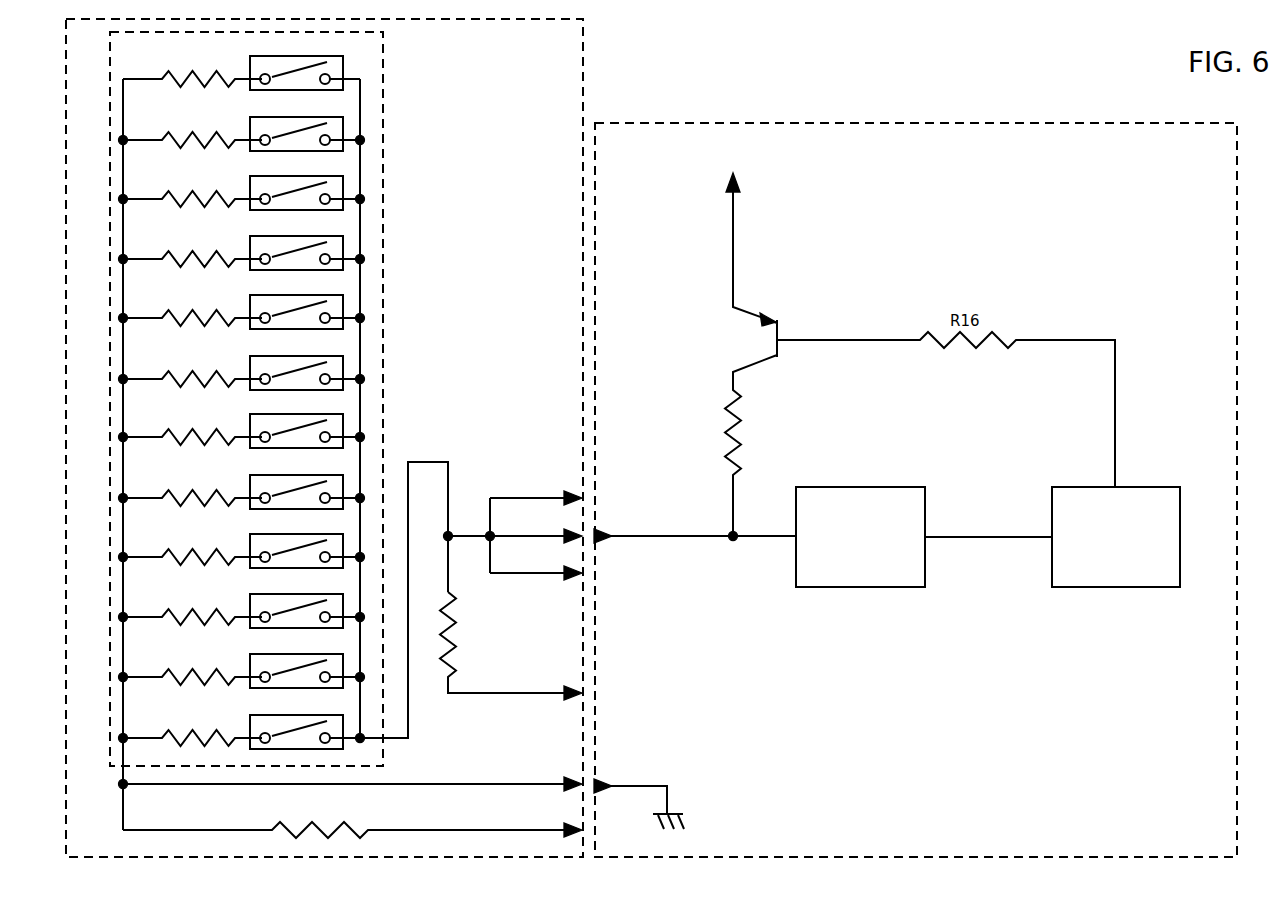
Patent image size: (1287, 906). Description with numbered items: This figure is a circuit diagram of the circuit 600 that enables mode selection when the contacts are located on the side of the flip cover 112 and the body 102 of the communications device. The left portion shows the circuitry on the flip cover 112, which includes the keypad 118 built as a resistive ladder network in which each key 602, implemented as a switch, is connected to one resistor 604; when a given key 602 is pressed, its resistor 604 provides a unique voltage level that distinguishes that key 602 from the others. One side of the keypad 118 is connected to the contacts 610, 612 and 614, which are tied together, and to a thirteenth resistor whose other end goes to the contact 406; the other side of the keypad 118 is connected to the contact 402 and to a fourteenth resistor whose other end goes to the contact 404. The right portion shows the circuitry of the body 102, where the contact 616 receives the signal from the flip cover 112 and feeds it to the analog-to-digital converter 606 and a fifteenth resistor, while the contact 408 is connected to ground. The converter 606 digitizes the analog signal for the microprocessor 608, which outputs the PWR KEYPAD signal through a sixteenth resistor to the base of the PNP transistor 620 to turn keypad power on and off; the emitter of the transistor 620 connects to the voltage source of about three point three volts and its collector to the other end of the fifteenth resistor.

The circuit 600 is at (960, 73).
The body 102 is at (1071, 124).
The flip cover 112 is at (583, 66).
The keypad 118 is at (383, 141).
The key 602 is at (300, 92).
The resistor 604 is at (170, 82).
The analog-to-digital converter 606 is at (864, 487).
The microprocessor 608 is at (1144, 487).
The contact 610 is at (566, 532).
The contact 612 is at (566, 581).
The contact 614 is at (566, 494).
The contact 616 is at (623, 536).
The PNP transistor 620 is at (740, 313).
The contact 402 is at (566, 781).
The contact 404 is at (566, 827).
The contact 406 is at (566, 690).
The contact 408 is at (627, 786).